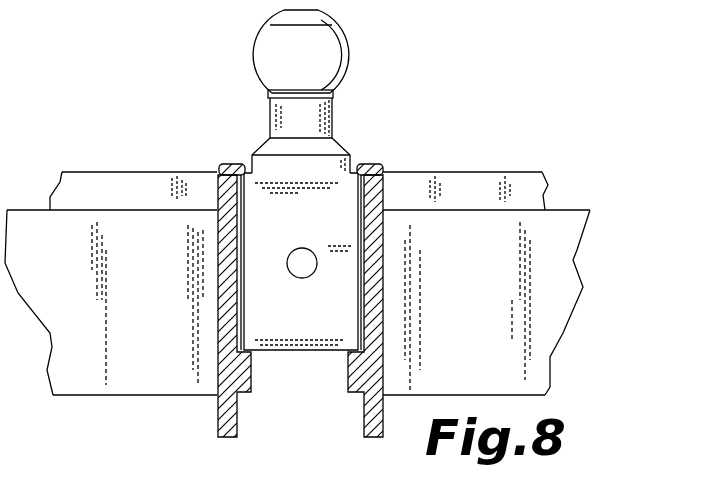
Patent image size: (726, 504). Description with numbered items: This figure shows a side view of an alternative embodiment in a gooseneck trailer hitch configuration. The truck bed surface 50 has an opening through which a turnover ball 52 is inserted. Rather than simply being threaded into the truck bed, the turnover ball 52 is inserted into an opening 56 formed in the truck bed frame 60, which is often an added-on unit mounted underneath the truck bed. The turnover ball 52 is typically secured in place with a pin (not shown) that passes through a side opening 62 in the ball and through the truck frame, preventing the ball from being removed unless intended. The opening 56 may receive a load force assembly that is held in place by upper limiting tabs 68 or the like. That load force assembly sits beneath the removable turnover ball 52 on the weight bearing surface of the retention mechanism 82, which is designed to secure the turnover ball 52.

The truck bed surface 50 is at (493, 172).
The turnover ball 52 is at (357, 53).
The opening 56 is at (243, 405).
The truck bed frame 60 is at (573, 260).
The side opening 62 is at (309, 249).
The upper limiting tabs 68 is at (236, 164).
The retention mechanism 82 is at (340, 362).